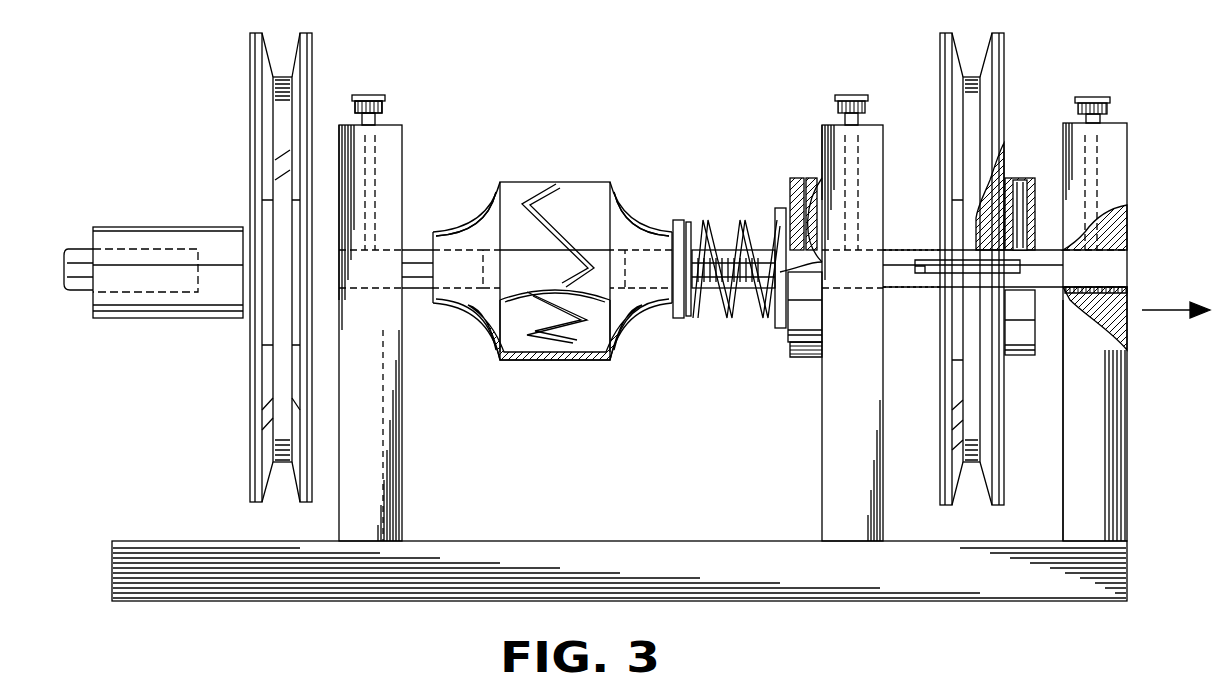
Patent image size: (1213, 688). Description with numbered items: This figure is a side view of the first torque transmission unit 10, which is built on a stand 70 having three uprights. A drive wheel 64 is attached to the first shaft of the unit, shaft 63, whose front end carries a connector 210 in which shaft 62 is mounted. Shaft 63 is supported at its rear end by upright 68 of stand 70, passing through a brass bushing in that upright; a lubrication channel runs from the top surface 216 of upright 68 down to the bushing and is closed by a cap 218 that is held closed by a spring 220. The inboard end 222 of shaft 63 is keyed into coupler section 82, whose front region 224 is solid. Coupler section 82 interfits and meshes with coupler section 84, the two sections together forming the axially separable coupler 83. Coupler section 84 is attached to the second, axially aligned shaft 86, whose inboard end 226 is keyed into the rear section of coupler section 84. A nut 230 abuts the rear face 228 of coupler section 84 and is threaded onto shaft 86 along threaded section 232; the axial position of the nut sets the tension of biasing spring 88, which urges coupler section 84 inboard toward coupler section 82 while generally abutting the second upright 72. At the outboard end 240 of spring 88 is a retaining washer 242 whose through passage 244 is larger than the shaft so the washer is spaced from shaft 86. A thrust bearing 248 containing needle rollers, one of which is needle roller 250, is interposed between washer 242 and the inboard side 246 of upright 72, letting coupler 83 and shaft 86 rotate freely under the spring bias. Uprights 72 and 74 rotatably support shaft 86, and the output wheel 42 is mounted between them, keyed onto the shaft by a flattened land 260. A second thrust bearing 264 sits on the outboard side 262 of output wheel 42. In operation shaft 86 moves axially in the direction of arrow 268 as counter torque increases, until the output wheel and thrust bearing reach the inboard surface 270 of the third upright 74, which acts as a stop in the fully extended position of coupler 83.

The torque transmission unit 10 is at (437, 78).
The output wheel 42 is at (1004, 72).
The shaft 62 is at (80, 292).
The shaft 63 is at (412, 290).
The drive wheel 64 is at (251, 72).
The upright 68 is at (402, 140).
The stand 70 is at (188, 538).
The second upright 72 is at (883, 158).
The third upright 74 is at (1127, 162).
The coupler section 82 is at (390, 246).
The coupler 83 is at (580, 178).
The coupler section 84 is at (611, 184).
The shaft 86 is at (884, 251).
The spring 88 is at (722, 318).
The connector 210 is at (197, 318).
The top surface 216 is at (340, 125).
The cap 218 is at (370, 95).
The spring 220 is at (384, 106).
The inboard end 222 is at (480, 330).
The front region 224 is at (478, 190).
The inboard end 226 is at (626, 234).
The rear face 228 is at (690, 228).
The nut 230 is at (678, 220).
The threaded section 232 is at (688, 318).
The outboard end 240 is at (778, 226).
The retaining washer 242 is at (798, 178).
The through passage 244 is at (776, 312).
The inboard side 246 is at (822, 140).
The thrust bearing 248 is at (818, 185).
The needle roller 250 is at (883, 200).
The flattened land 260 is at (926, 276).
The outboard side 262 is at (1004, 112).
The thrust second bearing 264 is at (1020, 178).
The arrow 268 is at (1172, 312).
The inboard surface 270 is at (1063, 385).